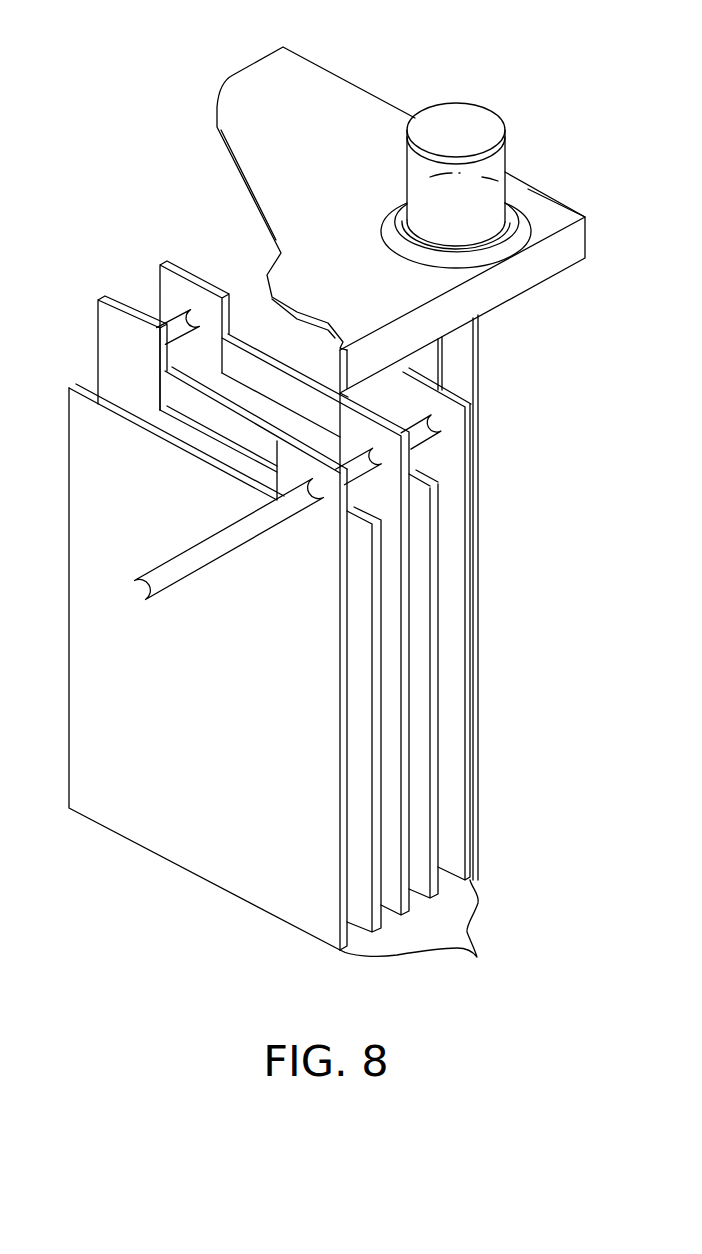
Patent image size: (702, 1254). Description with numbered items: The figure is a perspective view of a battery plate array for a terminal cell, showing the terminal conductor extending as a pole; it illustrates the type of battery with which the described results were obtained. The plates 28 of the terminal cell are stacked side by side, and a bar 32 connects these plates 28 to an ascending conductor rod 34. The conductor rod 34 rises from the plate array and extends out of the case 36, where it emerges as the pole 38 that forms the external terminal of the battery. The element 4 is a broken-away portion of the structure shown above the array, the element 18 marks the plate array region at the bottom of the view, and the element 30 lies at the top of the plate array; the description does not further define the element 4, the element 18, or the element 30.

The top plate (broken away) 4 is at (250, 110).
The end plate 18 is at (477, 957).
The plates 28 is at (387, 528).
The plate top edge 30 is at (471, 405).
The bar 32 is at (149, 300).
The ascending conductor rod 34 is at (480, 347).
The case 36 is at (522, 217).
The pole 38 is at (495, 112).